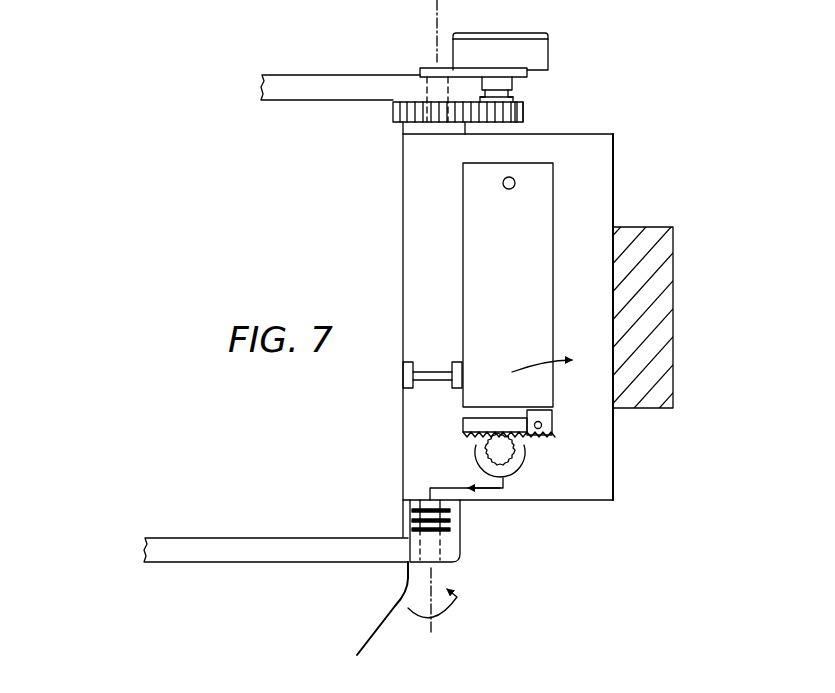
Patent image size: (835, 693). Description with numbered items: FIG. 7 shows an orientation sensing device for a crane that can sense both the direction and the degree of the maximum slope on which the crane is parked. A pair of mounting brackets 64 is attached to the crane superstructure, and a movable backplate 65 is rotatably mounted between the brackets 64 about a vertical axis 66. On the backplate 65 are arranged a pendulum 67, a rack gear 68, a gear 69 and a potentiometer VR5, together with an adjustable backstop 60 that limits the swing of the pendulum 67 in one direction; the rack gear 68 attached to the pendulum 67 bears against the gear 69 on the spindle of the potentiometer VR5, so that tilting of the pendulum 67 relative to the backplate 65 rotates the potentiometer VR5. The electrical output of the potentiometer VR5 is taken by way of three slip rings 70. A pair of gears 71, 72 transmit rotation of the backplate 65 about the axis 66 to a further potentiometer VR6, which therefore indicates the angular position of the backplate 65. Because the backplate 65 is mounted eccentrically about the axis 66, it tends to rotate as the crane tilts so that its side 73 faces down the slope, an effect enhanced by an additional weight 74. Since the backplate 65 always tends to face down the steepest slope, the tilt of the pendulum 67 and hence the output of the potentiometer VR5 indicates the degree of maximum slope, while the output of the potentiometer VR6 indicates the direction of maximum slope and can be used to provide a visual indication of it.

The adjustable backstop 60 is at (426, 372).
The mounting brackets 64 is at (293, 74).
The movable backplate 65 is at (407, 238).
The vertical axis 66 is at (433, 582).
The pendulum 67 is at (537, 192).
The rack gear 68 is at (465, 426).
The gear 69 is at (490, 445).
The slip rings 70 is at (460, 518).
The gear 71 is at (393, 108).
The gear 72 is at (525, 108).
The side of the backplate 73 is at (613, 448).
The additional weight 74 is at (645, 225).
The potentiometer VR5 is at (520, 458).
The potentiometer VR6 is at (495, 50).